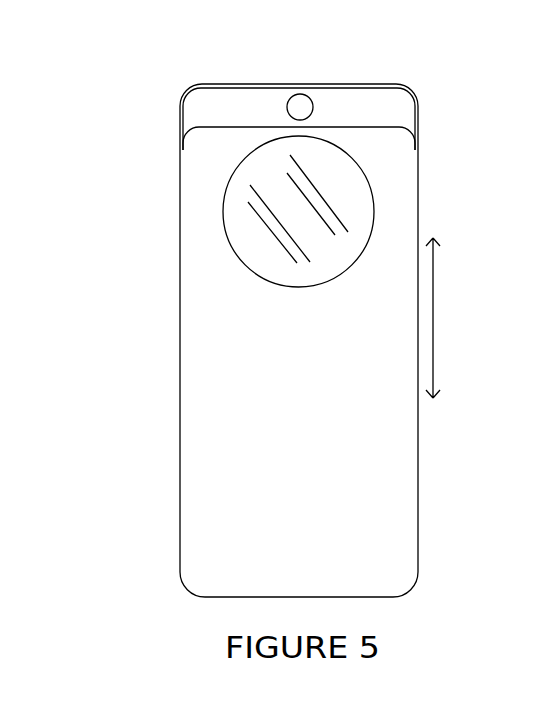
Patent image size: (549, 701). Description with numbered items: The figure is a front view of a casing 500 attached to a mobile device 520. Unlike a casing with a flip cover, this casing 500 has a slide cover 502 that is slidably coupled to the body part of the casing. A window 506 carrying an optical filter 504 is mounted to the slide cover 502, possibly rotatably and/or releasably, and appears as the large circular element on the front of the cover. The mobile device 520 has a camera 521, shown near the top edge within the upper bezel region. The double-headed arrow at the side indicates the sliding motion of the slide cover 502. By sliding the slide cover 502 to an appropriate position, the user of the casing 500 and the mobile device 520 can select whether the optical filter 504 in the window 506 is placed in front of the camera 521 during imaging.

The casing 500 is at (112, 483).
The slide cover 502 is at (193, 347).
The optical filter 504 is at (243, 243).
The window 506 is at (217, 209).
The mobile device 520 is at (375, 108).
The camera 521 is at (300, 107).